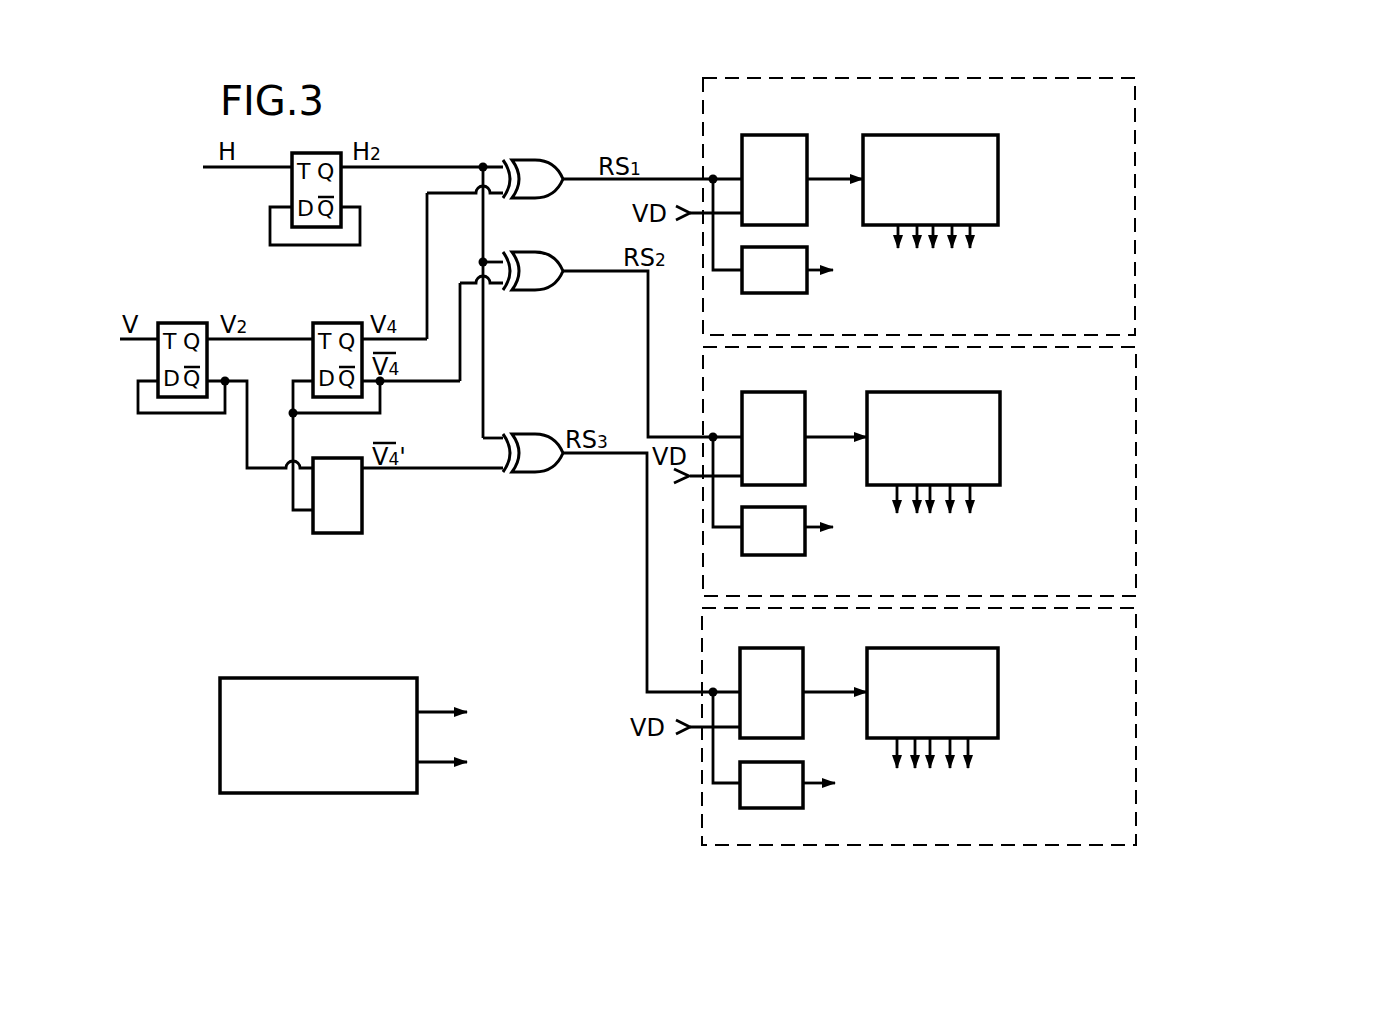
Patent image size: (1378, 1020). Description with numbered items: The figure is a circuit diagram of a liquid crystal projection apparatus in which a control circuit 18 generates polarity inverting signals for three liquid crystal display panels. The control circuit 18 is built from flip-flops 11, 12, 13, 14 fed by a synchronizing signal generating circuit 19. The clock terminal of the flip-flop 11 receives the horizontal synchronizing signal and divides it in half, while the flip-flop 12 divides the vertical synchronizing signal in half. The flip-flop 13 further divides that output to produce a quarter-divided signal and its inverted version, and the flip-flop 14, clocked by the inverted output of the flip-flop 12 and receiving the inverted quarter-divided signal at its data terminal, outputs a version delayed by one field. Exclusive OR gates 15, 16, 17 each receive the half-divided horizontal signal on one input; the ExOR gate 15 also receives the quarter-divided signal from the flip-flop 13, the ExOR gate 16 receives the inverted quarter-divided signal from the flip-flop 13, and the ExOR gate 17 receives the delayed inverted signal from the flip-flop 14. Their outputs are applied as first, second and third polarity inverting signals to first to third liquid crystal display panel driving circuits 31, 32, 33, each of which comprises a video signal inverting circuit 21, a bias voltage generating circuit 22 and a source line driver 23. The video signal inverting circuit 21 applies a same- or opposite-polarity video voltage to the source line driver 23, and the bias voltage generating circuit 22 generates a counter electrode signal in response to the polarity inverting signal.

The flip-flop 11 is at (303, 153).
The flip-flop 12 is at (183, 323).
The flip-flop 13 is at (337, 323).
The flip-flop 14 is at (325, 458).
The Exclusive OR gate 15 is at (516, 159).
The Exclusive OR gate 16 is at (520, 250).
The Exclusive OR gate 17 is at (513, 432).
The control circuit 18 is at (470, 130).
The synchronizing signal generating circuit 19 is at (300, 678).
The video signal inverting circuit 21 is at (760, 135).
The bias voltage generating circuit 22 is at (765, 293).
The source line driver 23 is at (956, 135).
The first liquid crystal display panel driving circuit 31 is at (1137, 138).
The second liquid crystal display panel driving circuit 32 is at (1137, 410).
The third liquid crystal display panel driving circuit 33 is at (1137, 666).